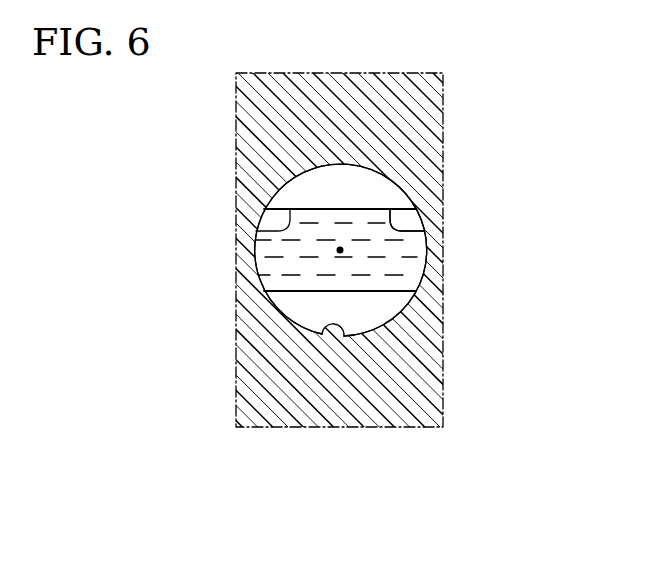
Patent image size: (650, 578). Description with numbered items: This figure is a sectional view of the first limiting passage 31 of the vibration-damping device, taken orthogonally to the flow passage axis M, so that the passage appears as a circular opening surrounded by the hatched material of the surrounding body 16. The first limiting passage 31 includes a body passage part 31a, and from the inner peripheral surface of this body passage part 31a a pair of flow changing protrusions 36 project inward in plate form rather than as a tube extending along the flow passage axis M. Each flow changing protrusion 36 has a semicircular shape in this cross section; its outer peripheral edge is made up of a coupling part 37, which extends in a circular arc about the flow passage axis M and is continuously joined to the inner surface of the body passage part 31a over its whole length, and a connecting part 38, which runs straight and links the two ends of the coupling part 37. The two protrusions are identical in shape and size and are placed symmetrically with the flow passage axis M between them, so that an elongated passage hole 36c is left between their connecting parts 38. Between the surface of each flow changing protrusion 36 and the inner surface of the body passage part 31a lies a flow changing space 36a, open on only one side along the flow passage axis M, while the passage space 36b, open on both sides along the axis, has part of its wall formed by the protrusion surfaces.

The housing body 16 is at (383, 428).
The first limiting passage 31 is at (308, 325).
The body passage part 31a is at (323, 332).
The flow changing protrusion 36 is at (383, 192).
The flow changing space 36a is at (298, 184).
The passage space 36b is at (263, 252).
The passage hole 36c is at (282, 231).
The coupling part 37 is at (347, 163).
The connecting part 38 is at (420, 228).
The flow passage axis M is at (340, 250).